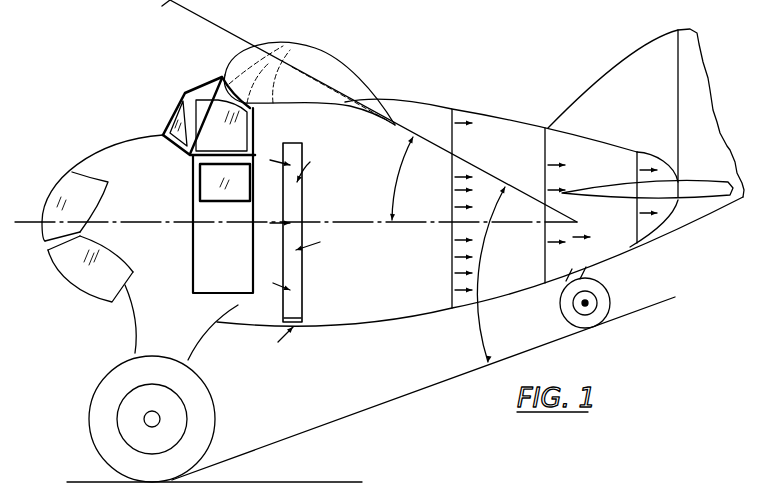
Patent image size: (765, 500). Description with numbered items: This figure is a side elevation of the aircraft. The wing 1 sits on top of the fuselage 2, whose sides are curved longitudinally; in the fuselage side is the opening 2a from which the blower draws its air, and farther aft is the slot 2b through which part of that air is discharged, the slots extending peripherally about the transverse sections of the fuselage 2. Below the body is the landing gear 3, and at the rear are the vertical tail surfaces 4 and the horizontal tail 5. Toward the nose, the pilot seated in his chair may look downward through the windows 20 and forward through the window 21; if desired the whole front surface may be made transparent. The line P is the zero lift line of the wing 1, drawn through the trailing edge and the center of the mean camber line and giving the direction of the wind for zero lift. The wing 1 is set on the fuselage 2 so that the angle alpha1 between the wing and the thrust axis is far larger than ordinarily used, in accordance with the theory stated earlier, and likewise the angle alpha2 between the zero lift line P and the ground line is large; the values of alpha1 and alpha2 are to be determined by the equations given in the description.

The wing 1 is at (338, 68).
The fuselage 2 is at (408, 113).
The opening 2a is at (300, 258).
The slot 2b is at (513, 142).
The landing gear 3 is at (175, 346).
The vertical tail surfaces 4 is at (697, 82).
The horizontal tail 5 is at (680, 182).
The windows 20 is at (90, 282).
The window 21 is at (180, 125).
The zero lift line P is at (361, 111).
The angle alpha1 is at (401, 178).
The angle alpha2 is at (489, 274).